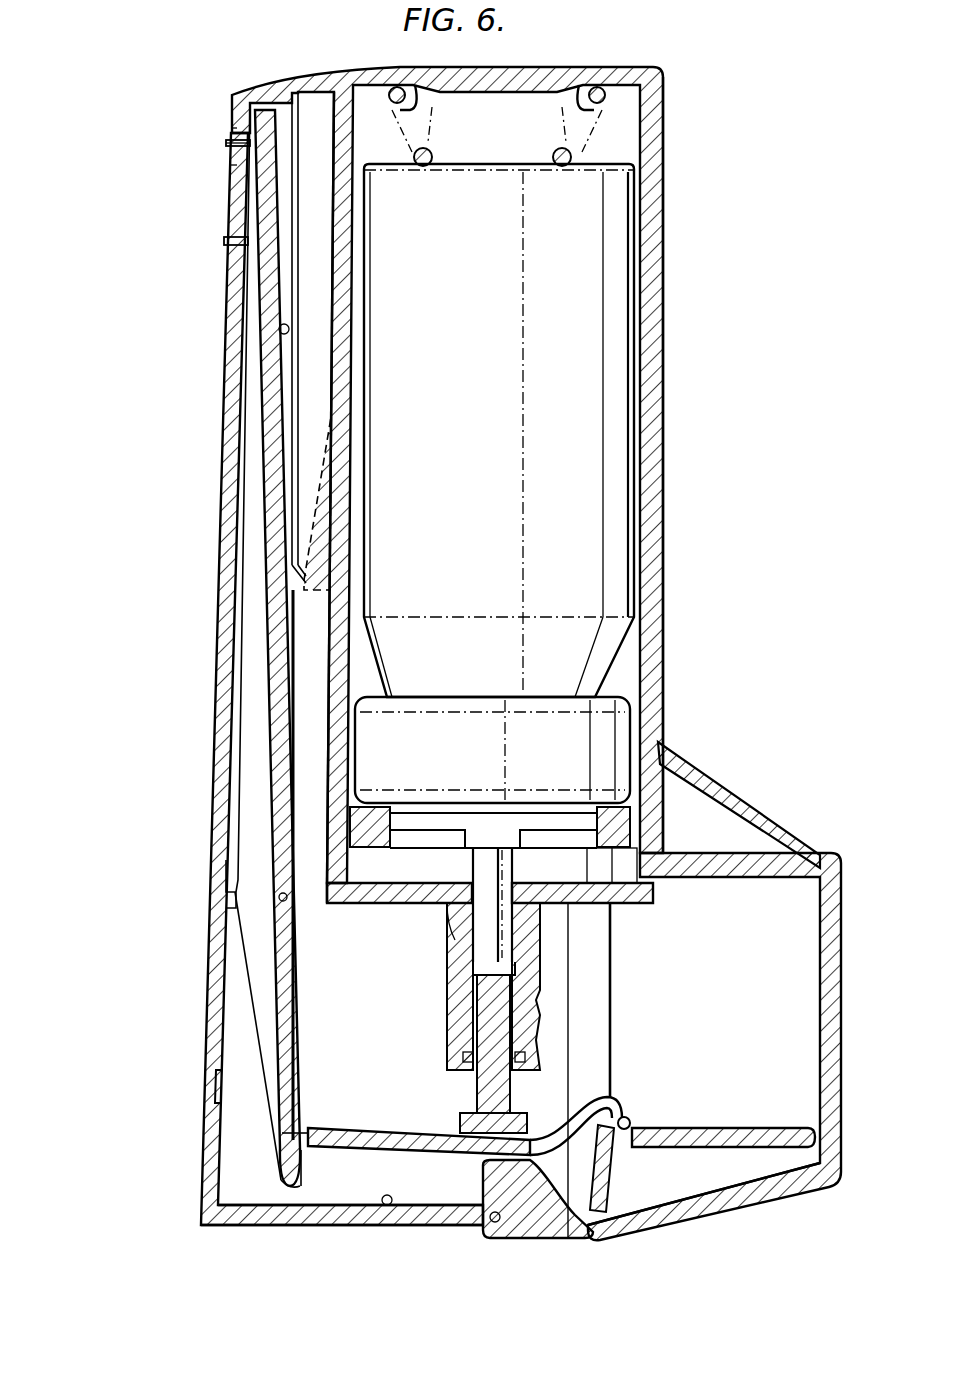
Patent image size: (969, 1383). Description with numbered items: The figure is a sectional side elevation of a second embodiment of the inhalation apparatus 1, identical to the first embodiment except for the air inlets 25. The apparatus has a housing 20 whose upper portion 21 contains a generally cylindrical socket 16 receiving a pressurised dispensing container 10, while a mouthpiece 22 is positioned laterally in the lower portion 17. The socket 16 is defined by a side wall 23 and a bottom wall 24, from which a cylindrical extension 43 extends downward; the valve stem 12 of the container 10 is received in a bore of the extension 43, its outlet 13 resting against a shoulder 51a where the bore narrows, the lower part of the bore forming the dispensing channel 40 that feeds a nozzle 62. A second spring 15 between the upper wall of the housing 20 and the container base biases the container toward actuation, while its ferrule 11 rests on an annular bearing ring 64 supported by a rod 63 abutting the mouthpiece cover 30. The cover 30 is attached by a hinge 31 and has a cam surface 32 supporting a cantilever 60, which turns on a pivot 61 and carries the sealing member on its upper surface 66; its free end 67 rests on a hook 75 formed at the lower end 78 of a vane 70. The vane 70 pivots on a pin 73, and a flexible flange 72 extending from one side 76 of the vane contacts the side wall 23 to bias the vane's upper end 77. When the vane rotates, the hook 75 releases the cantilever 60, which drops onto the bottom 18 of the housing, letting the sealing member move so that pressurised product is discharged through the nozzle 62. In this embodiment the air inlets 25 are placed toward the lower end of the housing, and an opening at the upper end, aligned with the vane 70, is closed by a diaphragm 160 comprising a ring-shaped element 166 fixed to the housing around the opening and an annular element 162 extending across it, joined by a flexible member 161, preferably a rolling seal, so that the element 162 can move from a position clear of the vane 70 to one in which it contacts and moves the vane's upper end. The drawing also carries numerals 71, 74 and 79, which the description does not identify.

The inhalation apparatus 1 is at (725, 325).
The pressurised dispensing container 10 is at (578, 455).
The ferrule 11 is at (600, 718).
The valve stem 12 is at (493, 848).
The outlet 13 is at (540, 937).
The second spring 15 is at (607, 98).
The cylindrical socket 16 is at (633, 148).
The lower portion 17 is at (185, 1230).
The bottom 18 is at (390, 1208).
The housing 20 is at (150, 1068).
The upper portion 21 is at (655, 220).
The mouthpiece 22 is at (770, 857).
The side wall 23 is at (326, 610).
The bottom wall 24 is at (280, 893).
The air inlets 25 is at (207, 1062).
The mouthpiece cover 30 is at (785, 1195).
The hinge 31 is at (490, 1222).
The cam surface 32 is at (530, 1238).
The dispensing channel 40 is at (550, 958).
The cylindrical extension 43 is at (465, 985).
The shoulder 51a is at (470, 965).
The cantilever 60 is at (376, 1130).
The pivot 61 is at (628, 1128).
The nozzle 62 is at (537, 992).
The rod 63 is at (583, 1140).
The annular bearing ring 64 is at (533, 830).
The upper surface 66 is at (418, 1125).
The free end 67 is at (300, 1133).
The vane 70 is at (217, 644).
The lever wall 71 is at (260, 392).
The flexible flange 72 is at (312, 505).
The pin 73 is at (312, 878).
The support shelf 74 is at (340, 795).
The hook 75 is at (298, 1165).
The side 76 is at (279, 328).
The upper end 77 is at (273, 103).
The lower end 78 is at (288, 1183).
The lever tip 79 is at (317, 1168).
The diaphragm 160 is at (197, 188).
The flexible member 161 is at (247, 143).
The annular element 162 is at (235, 165).
The ring-shaped element 166 is at (232, 128).